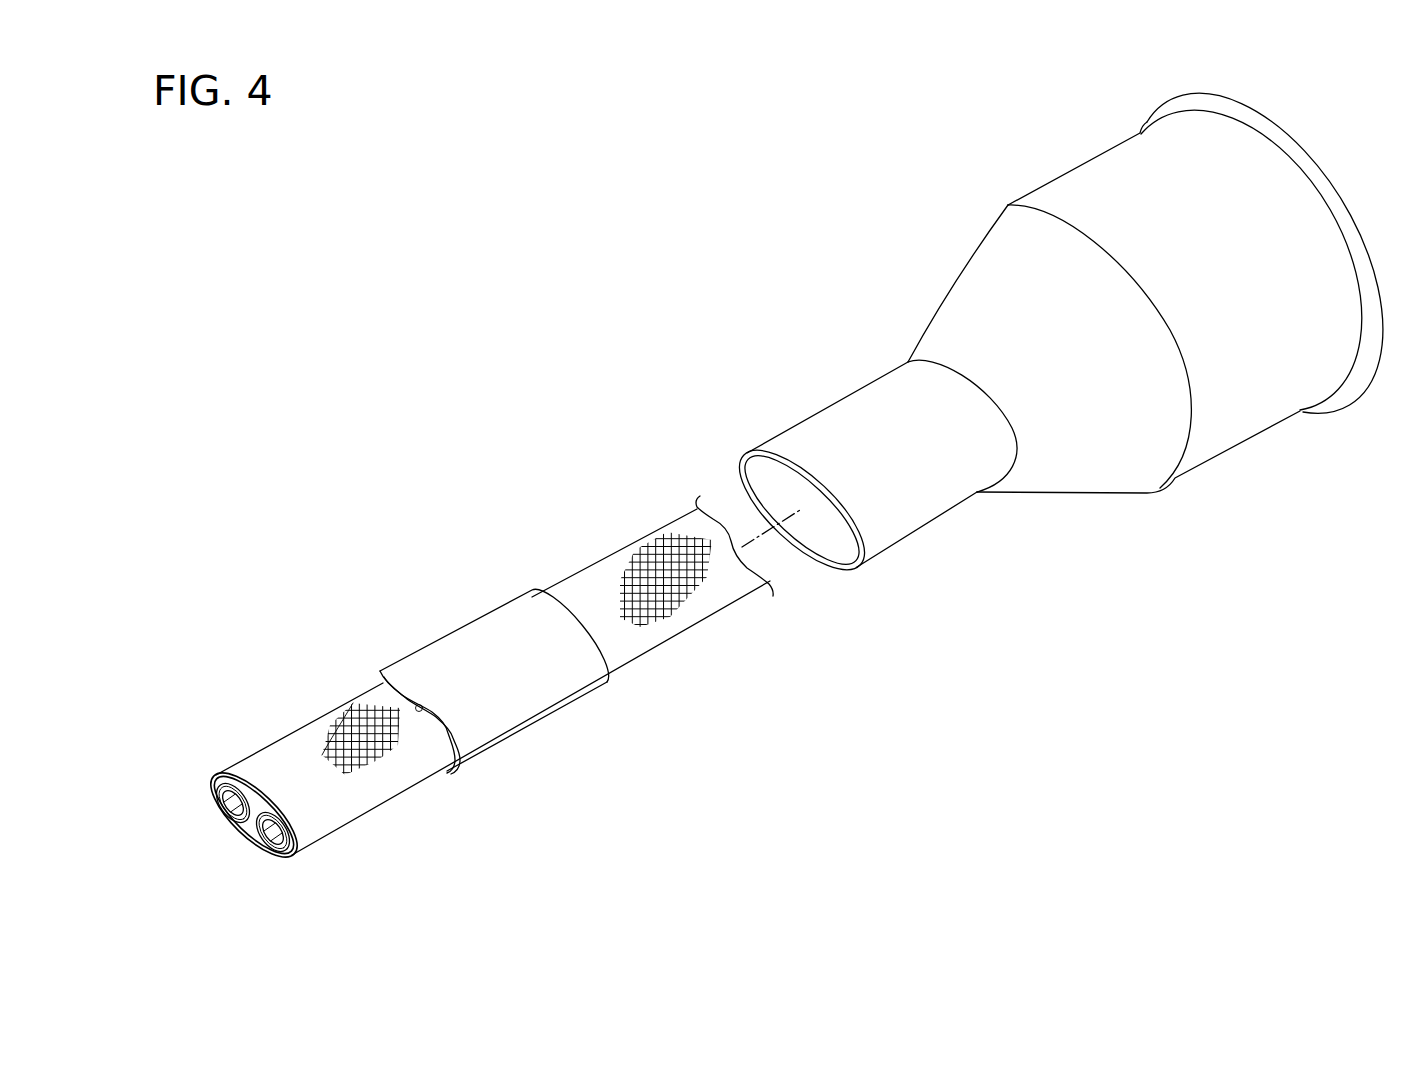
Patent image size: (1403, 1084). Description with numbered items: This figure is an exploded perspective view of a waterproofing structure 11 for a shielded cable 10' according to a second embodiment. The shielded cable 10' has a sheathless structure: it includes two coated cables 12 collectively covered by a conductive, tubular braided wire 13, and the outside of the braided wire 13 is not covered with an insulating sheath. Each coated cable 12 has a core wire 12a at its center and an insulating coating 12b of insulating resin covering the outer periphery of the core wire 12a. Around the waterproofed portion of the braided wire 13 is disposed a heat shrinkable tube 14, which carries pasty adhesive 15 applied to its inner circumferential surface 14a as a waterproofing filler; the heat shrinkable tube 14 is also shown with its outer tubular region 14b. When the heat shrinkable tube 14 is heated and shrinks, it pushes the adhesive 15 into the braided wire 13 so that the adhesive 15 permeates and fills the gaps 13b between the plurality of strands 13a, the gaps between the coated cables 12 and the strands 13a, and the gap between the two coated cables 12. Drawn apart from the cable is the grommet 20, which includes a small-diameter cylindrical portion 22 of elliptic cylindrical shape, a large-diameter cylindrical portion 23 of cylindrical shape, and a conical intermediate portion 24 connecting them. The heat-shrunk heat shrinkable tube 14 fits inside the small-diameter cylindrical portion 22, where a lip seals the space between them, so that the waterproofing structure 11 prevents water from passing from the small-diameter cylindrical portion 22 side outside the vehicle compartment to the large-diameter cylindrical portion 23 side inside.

The shielded cable 10' is at (656, 549).
The waterproofing structure 11 is at (432, 634).
The coated cable 12 is at (262, 790).
The core wire 12a is at (222, 803).
The insulating coating 12b is at (218, 785).
The braided wire 13 is at (325, 705).
The strand 13a is at (373, 753).
The gap 13b is at (347, 755).
The heat shrinkable tube 14 is at (569, 714).
The inner circumferential surface 14a is at (443, 703).
The tubular portion of sleeve 14b is at (510, 727).
The adhesive 15 is at (436, 735).
The grommet 20 is at (1004, 200).
The small-diameter cylindrical portion 22 is at (913, 507).
The large-diameter cylindrical portion 23 is at (1243, 427).
The intermediate portion 24 is at (1100, 473).